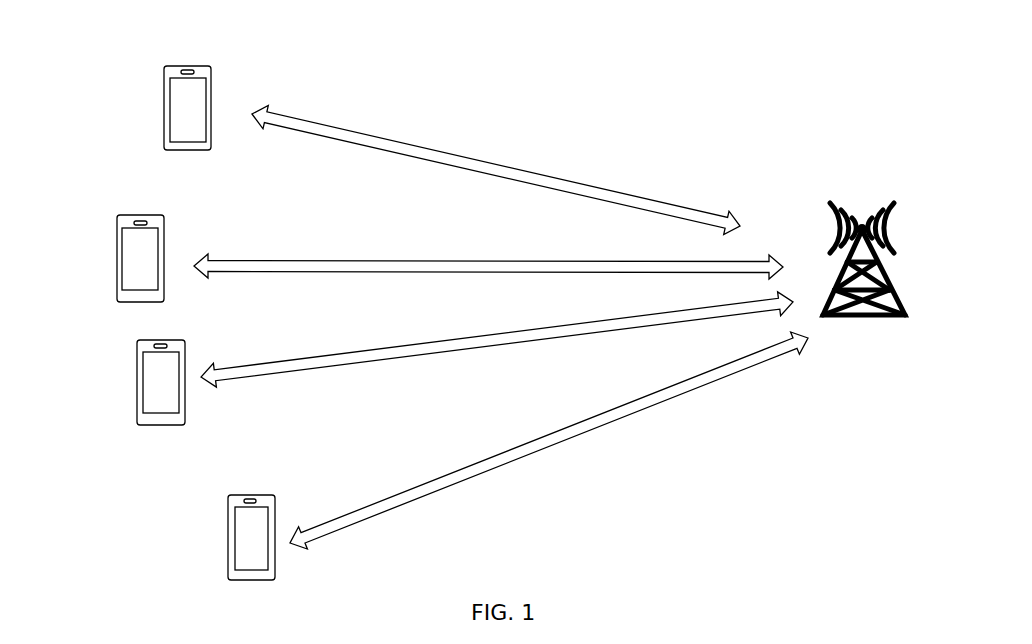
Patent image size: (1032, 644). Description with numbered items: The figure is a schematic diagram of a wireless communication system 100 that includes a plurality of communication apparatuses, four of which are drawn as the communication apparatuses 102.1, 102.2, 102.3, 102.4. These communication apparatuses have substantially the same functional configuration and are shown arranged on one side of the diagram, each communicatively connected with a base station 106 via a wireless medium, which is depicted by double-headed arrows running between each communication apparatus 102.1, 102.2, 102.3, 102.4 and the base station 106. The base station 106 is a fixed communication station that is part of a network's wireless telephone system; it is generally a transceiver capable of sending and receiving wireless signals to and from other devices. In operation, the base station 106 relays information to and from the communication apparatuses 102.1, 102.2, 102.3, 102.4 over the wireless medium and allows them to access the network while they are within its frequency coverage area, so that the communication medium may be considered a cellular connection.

The wireless communication system 100 is at (857, 115).
The communication apparatus 102.1 is at (150, 108).
The communication apparatus 102.2 is at (113, 260).
The communication apparatus 102.3 is at (128, 393).
The communication apparatus 102.4 is at (200, 550).
The base station 106 is at (787, 218).